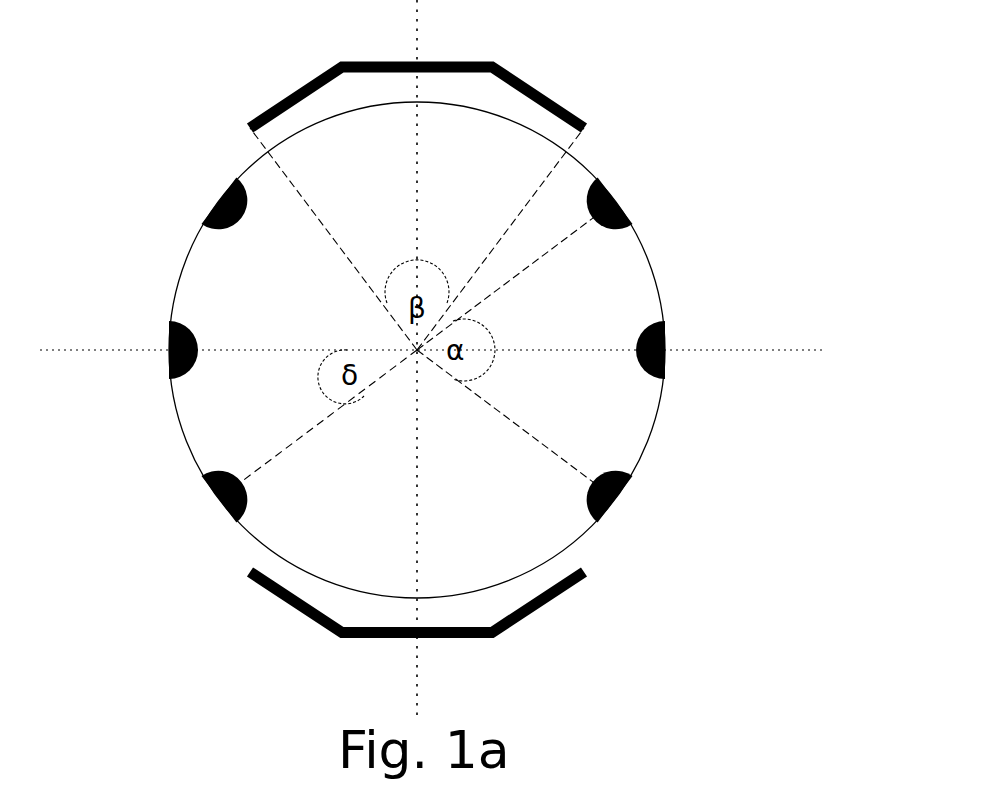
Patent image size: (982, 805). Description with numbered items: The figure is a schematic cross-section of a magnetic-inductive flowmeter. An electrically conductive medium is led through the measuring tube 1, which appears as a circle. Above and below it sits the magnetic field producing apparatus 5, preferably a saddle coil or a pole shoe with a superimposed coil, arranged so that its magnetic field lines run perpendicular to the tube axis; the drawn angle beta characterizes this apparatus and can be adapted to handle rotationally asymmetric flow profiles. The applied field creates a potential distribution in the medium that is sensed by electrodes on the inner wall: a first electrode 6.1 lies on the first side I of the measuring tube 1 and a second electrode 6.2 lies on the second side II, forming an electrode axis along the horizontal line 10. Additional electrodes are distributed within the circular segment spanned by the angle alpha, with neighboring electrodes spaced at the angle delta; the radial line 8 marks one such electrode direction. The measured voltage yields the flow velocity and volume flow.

The measuring tube 1 is at (548, 560).
The magnetic field producing apparatus 5 is at (523, 80).
The radial line 8 is at (527, 440).
The horizontal center plane 10 is at (476, 350).
The first electrode 6.1 is at (109, 325).
The second electrode 6.2 is at (726, 329).
The first side I is at (79, 128).
The second side II is at (803, 126).